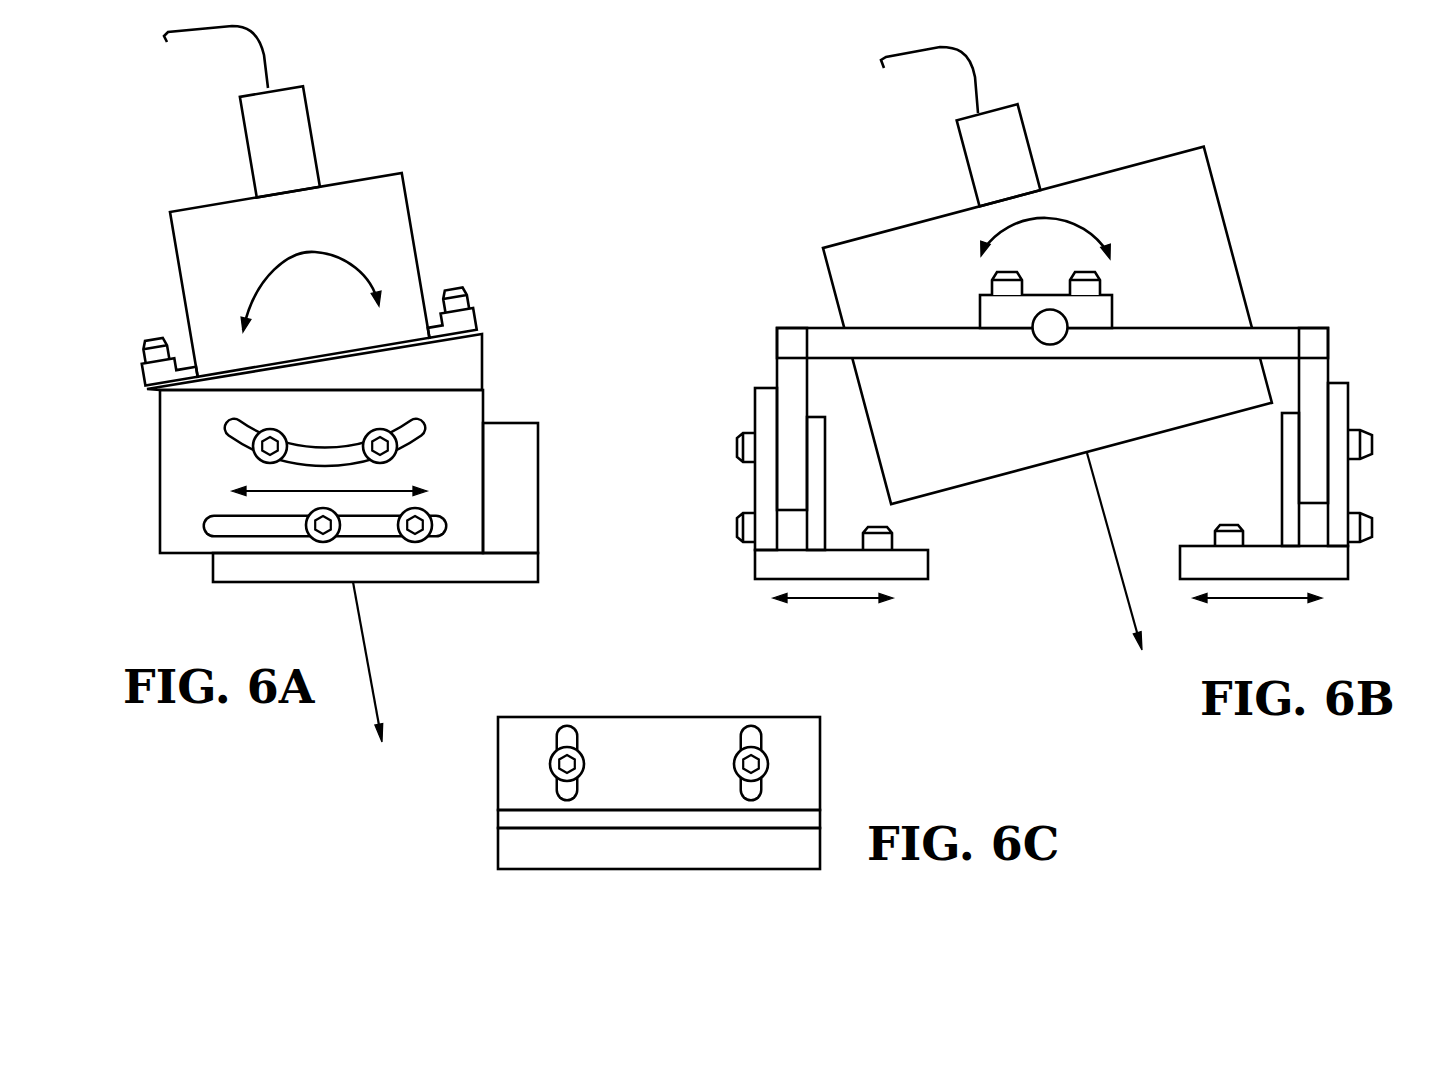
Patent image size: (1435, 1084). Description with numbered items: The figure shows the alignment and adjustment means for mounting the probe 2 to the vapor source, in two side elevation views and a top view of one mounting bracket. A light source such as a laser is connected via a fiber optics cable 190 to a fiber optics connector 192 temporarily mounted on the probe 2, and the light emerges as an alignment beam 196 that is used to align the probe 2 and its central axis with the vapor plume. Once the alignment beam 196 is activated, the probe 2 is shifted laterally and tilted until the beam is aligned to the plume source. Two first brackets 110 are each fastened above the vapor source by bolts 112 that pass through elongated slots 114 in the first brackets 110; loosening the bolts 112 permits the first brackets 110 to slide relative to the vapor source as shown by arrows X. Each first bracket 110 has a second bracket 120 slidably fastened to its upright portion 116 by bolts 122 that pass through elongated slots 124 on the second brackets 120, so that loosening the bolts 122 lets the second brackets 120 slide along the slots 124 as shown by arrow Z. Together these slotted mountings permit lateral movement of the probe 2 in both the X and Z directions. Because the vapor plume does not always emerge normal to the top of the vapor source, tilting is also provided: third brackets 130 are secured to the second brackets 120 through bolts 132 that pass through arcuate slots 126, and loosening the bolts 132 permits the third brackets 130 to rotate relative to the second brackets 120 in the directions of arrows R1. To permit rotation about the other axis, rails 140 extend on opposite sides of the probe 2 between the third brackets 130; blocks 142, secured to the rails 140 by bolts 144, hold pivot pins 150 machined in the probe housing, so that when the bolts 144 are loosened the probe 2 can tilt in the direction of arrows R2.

In FIG. 6A, the probe 2 is at (182, 157).
In FIG. 6B, the probe 2 is at (888, 148).
In FIG. 6A, the first bracket 110 is at (493, 582).
In FIG. 6B, the first bracket 110 is at (775, 568).
In FIG. 6C, the first bracket 110 is at (498, 847).
In FIG. 6B, the bolt 112 is at (892, 528).
In FIG. 6C, the bolt 112 is at (733, 768).
In FIG. 6C, the elongated slot 114 is at (567, 735).
In FIG. 6A, the upright portion 116 is at (525, 477).
In FIG. 6B, the upright portion 116 is at (825, 453).
In FIG. 6C, the upright portion 116 is at (498, 817).
In FIG. 6A, the second bracket 120 is at (173, 493).
In FIG. 6B, the second bracket 120 is at (1340, 383).
In FIG. 6A, the bolt 122 is at (320, 543).
In FIG. 6B, the bolt 122 is at (737, 528).
In FIG. 6A, the elongated slot 124 is at (223, 527).
In FIG. 6A, the arcuate slot 126 is at (237, 428).
In FIG. 6A, the third bracket 130 is at (473, 353).
In FIG. 6B, the third bracket 130 is at (792, 323).
In FIG. 6A, the bolt 132 is at (360, 437).
In FIG. 6B, the bolt 132 is at (737, 447).
In FIG. 6B, the rail 140 is at (950, 345).
In FIG. 6A, the block 142 is at (477, 305).
In FIG. 6B, the block 142 is at (1113, 305).
In FIG. 6A, the bolt 144 is at (458, 287).
In FIG. 6B, the bolt 144 is at (1075, 273).
In FIG. 6B, the pivot pin 150 is at (1045, 345).
In FIG. 6A, the fiber optics cable 190 is at (265, 53).
In FIG. 6B, the fiber optics cable 190 is at (978, 70).
In FIG. 6A, the fiber optics connector 192 is at (313, 117).
In FIG. 6B, the fiber optics connector 192 is at (1027, 127).
In FIG. 6A, the alignment beam 196 is at (372, 688).
In FIG. 6B, the alignment beam 196 is at (1122, 593).
In FIG. 6A, the arrows R1 is at (320, 250).
In FIG. 6B, the arrows R2 is at (1088, 220).
In FIG. 6B, the arrows X is at (840, 600).
In FIG. 6A, the arrow Z is at (400, 483).